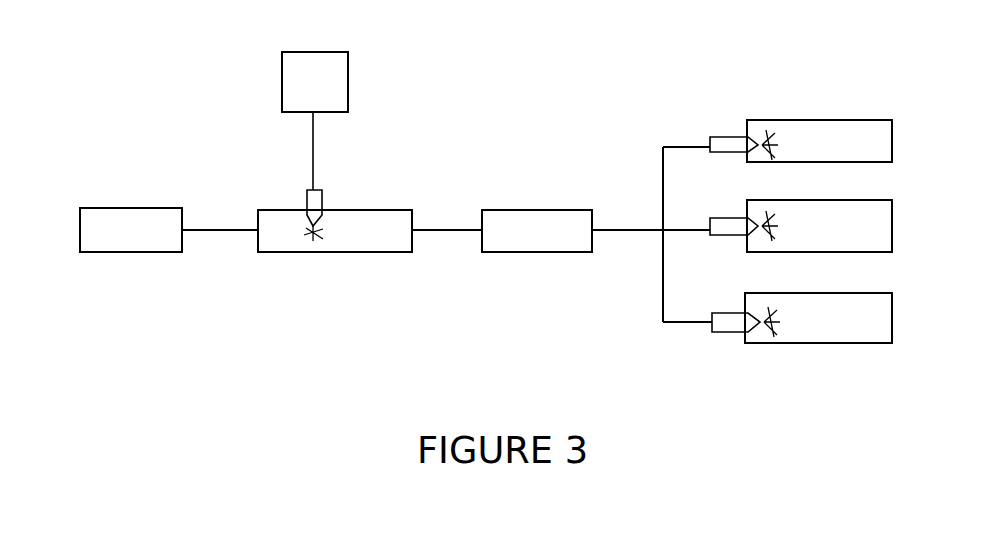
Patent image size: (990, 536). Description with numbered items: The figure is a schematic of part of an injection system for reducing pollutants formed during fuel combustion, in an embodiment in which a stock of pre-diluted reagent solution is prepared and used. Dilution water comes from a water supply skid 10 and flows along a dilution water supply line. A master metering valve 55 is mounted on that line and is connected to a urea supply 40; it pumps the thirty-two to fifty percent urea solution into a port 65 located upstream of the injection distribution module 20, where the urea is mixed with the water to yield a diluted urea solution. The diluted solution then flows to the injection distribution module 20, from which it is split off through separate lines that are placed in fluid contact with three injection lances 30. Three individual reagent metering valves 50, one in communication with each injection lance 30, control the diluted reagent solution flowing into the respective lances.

The water supply skid 10 is at (118, 222).
The port 65 is at (368, 225).
The urea supply 40 is at (337, 73).
The master metering valve 55 is at (307, 198).
The injection distribution module 20 is at (527, 225).
The reagent metering valve 50 is at (720, 135).
The injection lance 30 is at (878, 318).